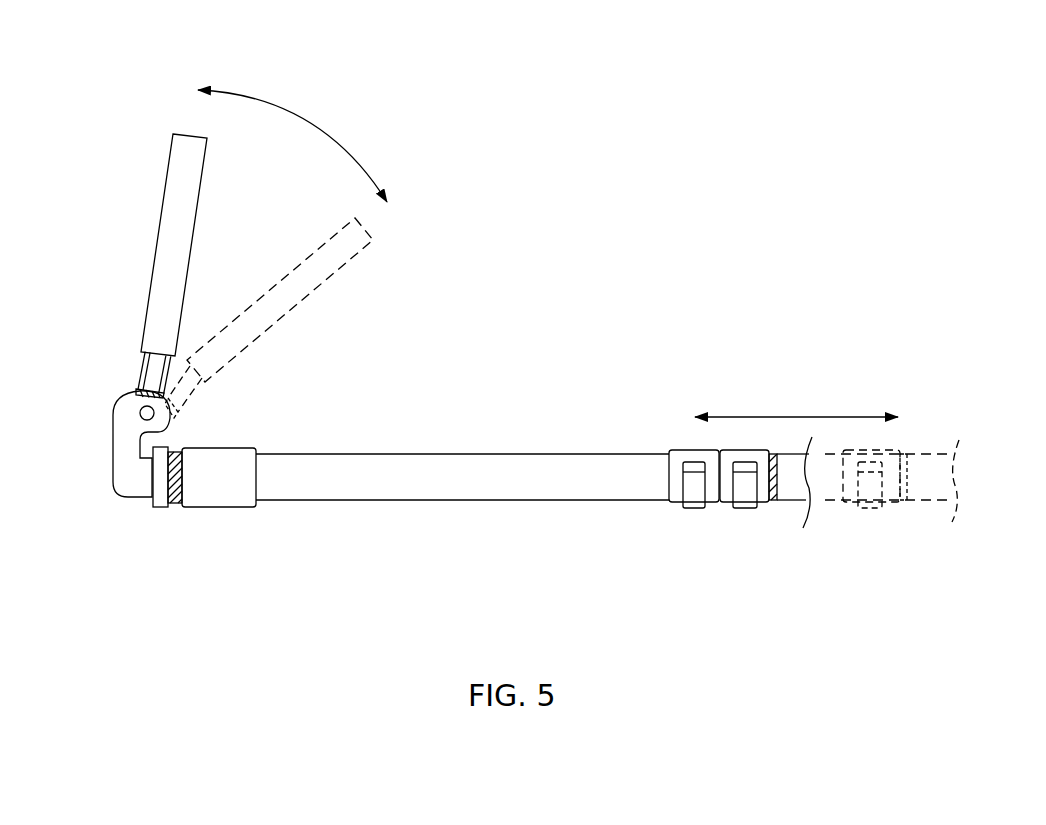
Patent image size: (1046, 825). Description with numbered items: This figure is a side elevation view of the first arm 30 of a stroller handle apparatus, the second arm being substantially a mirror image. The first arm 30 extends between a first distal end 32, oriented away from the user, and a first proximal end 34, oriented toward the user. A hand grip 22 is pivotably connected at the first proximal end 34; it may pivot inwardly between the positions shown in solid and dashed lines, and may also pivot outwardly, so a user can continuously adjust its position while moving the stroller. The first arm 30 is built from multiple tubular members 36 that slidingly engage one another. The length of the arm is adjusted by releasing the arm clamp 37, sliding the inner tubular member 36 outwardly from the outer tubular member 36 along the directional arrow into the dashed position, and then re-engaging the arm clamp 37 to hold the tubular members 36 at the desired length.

The hand grip 22 is at (162, 195).
The first arm 30 is at (602, 107).
The first distal end 32 is at (930, 394).
The first proximal end 34 is at (118, 508).
The tubular members 36 is at (438, 453).
The arm clamp 37 is at (680, 502).